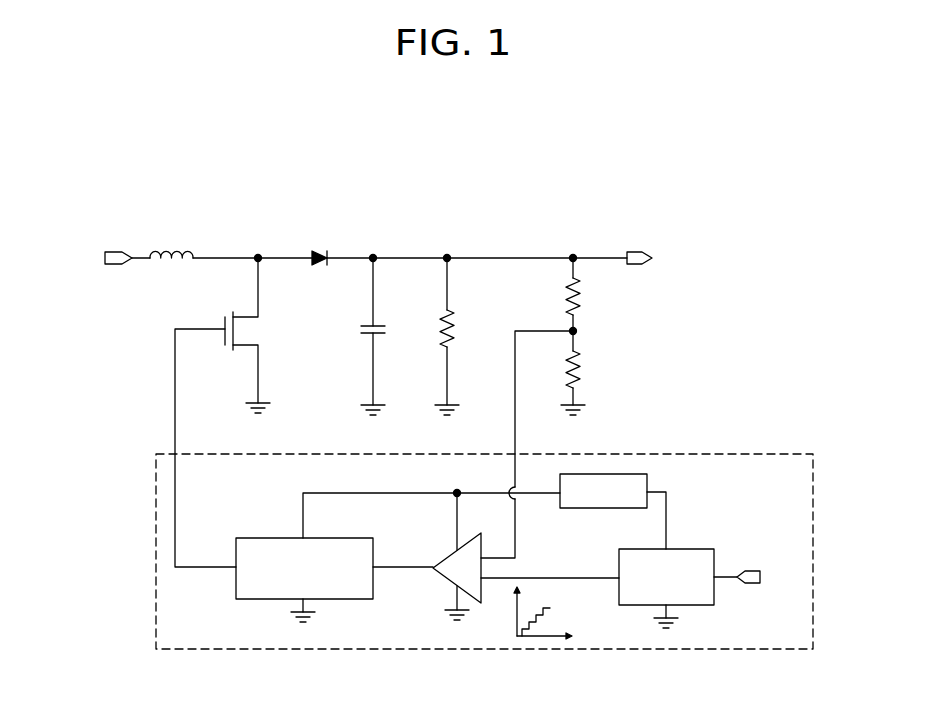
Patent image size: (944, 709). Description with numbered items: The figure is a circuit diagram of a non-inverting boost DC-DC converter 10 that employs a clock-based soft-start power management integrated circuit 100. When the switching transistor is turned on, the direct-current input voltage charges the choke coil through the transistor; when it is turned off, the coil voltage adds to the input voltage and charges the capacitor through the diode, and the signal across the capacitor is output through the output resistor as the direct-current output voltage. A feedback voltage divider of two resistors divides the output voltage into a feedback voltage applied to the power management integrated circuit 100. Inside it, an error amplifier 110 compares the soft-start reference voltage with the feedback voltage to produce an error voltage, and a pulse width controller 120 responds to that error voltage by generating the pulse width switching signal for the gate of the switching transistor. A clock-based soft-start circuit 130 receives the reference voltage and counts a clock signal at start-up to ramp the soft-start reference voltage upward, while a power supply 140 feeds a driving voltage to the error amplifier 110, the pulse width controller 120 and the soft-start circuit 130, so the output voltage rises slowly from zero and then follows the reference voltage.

The non-inverting boost DC-DC converter 10 is at (446, 174).
The power management integrated circuit 100 is at (156, 553).
The error amplifier 110 is at (440, 575).
The pulse width controller 120 is at (263, 599).
The clock-based soft-start circuit 130 is at (703, 605).
The power supply 140 is at (647, 479).